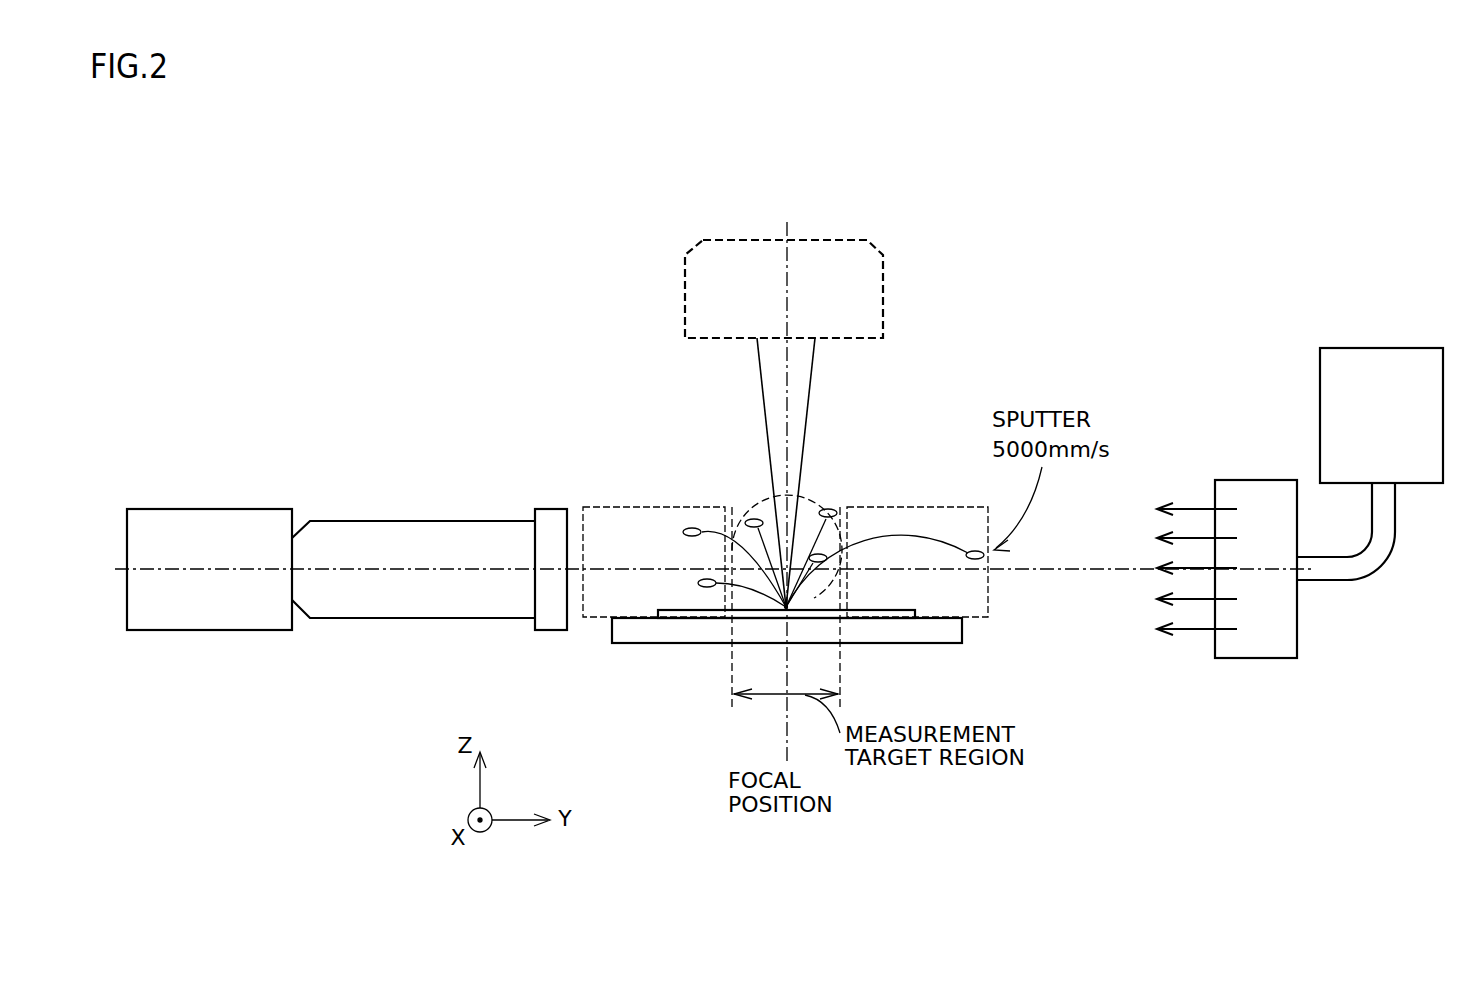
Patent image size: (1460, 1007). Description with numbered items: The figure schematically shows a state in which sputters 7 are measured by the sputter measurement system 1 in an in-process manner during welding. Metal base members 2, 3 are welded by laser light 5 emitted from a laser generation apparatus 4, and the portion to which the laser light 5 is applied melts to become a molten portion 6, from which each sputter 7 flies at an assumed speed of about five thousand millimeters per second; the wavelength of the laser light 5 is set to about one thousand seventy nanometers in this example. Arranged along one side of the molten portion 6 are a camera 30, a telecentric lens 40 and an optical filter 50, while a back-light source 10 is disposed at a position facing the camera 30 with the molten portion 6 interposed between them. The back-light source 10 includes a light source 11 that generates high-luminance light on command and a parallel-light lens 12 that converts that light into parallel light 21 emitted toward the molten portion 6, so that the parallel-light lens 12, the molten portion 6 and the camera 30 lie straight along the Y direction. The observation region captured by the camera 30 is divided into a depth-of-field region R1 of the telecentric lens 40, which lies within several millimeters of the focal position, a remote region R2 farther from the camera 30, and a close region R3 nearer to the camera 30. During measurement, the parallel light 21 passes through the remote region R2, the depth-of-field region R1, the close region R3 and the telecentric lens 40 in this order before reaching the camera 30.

The sputter measurement system 1 is at (776, 143).
The base member 2 is at (892, 608).
The base member 3 is at (937, 645).
The laser generation apparatus 4 is at (843, 240).
The laser light 5 is at (810, 390).
The molten portion 6 is at (788, 606).
The sputter 7 is at (980, 560).
The back-light source 10 is at (1320, 475).
The light source 11 is at (1418, 348).
The parallel-light lens 12 is at (1257, 480).
The parallel light 21 is at (1193, 630).
The camera 30 is at (213, 507).
The telecentric lens 40 is at (423, 520).
The optical filter 50 is at (552, 508).
The depth-of-field region R1 is at (813, 503).
The remote region R2 is at (927, 507).
The close region R3 is at (650, 507).